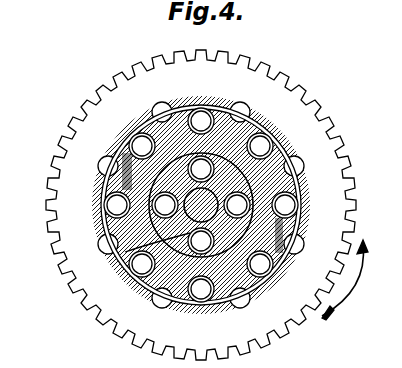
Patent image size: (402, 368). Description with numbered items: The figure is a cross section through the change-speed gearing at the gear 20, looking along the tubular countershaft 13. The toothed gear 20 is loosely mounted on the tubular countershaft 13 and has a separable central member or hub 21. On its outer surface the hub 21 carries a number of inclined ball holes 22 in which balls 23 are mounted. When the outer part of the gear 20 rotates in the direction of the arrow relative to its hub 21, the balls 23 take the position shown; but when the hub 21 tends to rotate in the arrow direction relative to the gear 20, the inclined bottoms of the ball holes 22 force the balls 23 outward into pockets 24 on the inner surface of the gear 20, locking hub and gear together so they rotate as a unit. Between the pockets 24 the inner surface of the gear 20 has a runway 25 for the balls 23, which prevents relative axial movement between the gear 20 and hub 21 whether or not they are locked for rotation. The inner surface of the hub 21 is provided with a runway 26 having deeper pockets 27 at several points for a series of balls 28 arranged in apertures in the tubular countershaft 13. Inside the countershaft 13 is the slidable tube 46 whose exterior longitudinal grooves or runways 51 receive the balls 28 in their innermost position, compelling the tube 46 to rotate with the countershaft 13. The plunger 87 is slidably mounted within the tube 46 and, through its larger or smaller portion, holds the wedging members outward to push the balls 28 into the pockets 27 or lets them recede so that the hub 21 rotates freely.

The tubular countershaft 13 is at (210, 188).
The gear 20 is at (72, 214).
The hub 21 is at (215, 150).
The inclined ball holes 22 is at (112, 172).
The balls 23 is at (143, 137).
The pockets 24 is at (103, 160).
The runway 25 is at (222, 100).
The runway 26 is at (297, 217).
The deeper pockets 27 is at (222, 302).
The balls 28 is at (152, 292).
The tube 46 is at (125, 252).
The longitudinal grooves 51 is at (215, 245).
The plunger 87 is at (186, 185).